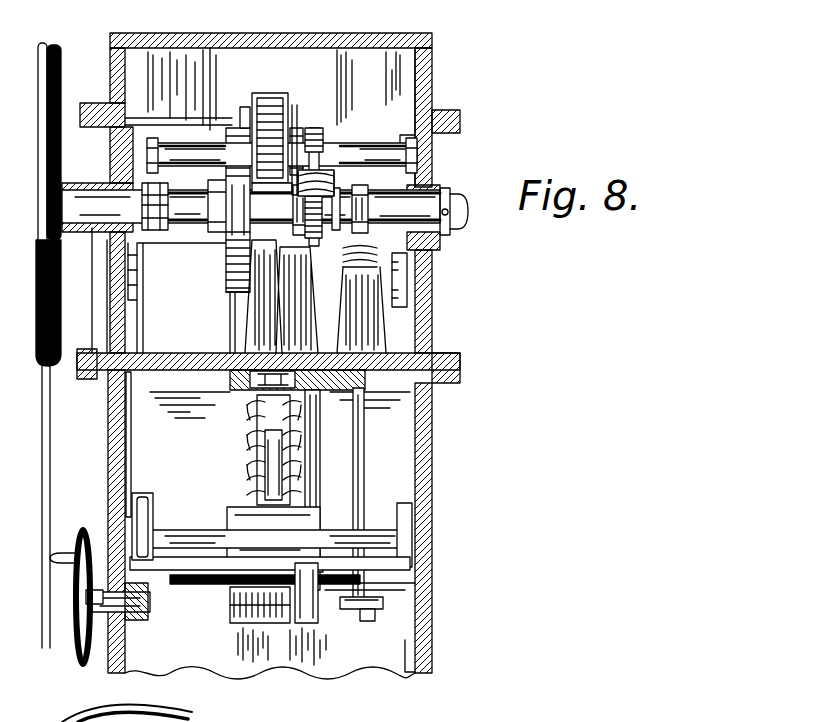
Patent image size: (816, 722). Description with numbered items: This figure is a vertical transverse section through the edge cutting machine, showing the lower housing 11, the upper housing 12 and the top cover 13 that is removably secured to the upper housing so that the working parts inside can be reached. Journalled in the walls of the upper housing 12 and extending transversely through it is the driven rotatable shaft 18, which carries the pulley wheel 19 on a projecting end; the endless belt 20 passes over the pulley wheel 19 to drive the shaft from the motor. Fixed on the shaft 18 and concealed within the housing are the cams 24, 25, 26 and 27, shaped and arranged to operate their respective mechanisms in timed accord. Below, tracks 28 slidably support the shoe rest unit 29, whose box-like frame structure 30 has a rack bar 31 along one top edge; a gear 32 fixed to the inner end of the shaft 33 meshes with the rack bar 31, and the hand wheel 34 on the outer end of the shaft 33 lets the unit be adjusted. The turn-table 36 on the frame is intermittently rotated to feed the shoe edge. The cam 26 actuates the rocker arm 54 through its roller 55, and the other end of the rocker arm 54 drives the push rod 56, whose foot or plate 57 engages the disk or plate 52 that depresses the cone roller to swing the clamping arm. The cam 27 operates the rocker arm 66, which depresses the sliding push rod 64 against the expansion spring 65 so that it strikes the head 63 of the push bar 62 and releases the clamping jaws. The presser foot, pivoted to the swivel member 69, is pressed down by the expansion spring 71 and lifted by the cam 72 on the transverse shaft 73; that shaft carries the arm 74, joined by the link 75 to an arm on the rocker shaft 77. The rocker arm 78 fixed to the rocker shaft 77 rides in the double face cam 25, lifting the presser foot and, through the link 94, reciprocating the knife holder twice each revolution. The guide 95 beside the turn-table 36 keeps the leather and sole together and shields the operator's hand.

The lower housing 11 is at (294, 521).
The upper housing 12 is at (272, 286).
The top cover 13 is at (279, 110).
The driven rotatable shaft 18 is at (276, 201).
The pulley wheel 19 is at (34, 225).
The endless belt 20 is at (28, 507).
The cam 24 is at (163, 240).
The double face cam 25 is at (220, 276).
The cam 26 is at (257, 214).
The cam 27 is at (369, 206).
The tracks 28 is at (301, 669).
The shoe rest unit 29 is at (255, 649).
The box-like frame structure 30 is at (316, 665).
The rack bar 31 is at (146, 623).
The gear 32 is at (145, 632).
The shaft 33 is at (82, 645).
The hand wheel 34 is at (54, 607).
The turn-table 36 is at (266, 609).
The disk or plate 52 is at (399, 591).
The rocker arm 54 is at (351, 126).
The roller 55 is at (352, 146).
The push rod 56 is at (387, 490).
The foot or plate 57 is at (284, 544).
The push bar 62 is at (409, 611).
The head 63 is at (354, 626).
The sliding push rod 64 is at (415, 494).
The expansion spring 65 is at (407, 300).
The rocker arm 66 is at (443, 155).
The swivel member 69 is at (249, 448).
The expansion spring 71 is at (241, 450).
The cam 72 is at (257, 515).
The transverse shaft 73 is at (271, 534).
The arm 74 is at (163, 522).
The link 75 is at (102, 444).
The rocker shaft 77 is at (312, 130).
The rocker arm 78 is at (278, 101).
The link 94 is at (285, 149).
The guide 95 is at (237, 619).